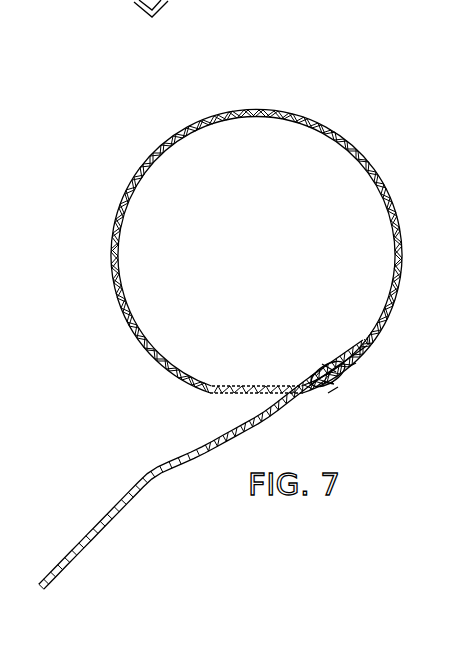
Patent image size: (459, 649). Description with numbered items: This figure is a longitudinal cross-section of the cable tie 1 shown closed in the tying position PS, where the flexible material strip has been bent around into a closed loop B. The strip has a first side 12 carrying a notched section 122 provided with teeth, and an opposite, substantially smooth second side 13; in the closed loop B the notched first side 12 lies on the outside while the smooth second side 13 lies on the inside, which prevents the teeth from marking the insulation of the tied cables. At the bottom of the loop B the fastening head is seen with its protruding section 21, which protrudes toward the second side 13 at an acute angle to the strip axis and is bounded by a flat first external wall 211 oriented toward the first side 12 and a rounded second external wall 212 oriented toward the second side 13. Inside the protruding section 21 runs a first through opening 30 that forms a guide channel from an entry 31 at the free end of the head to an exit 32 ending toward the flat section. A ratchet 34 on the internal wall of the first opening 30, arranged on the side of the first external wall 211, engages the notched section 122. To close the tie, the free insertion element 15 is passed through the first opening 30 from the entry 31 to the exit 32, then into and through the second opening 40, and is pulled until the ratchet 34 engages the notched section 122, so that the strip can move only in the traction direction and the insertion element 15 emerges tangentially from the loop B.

The cable tie 1 is at (229, 300).
The first side 12 is at (272, 219).
The notched section 122 is at (266, 110).
The second side 13 is at (366, 184).
The loop B is at (302, 128).
The tying position PS is at (434, 198).
The first through opening 30 is at (346, 363).
The second external wall 212 is at (328, 365).
The first external wall 211 is at (330, 396).
The entry 31 is at (360, 362).
The exit 32 is at (312, 374).
The ratchet 34 is at (318, 385).
The second opening 40 is at (256, 407).
The protruding section 21 is at (336, 396).
The insertion element 15 is at (229, 424).